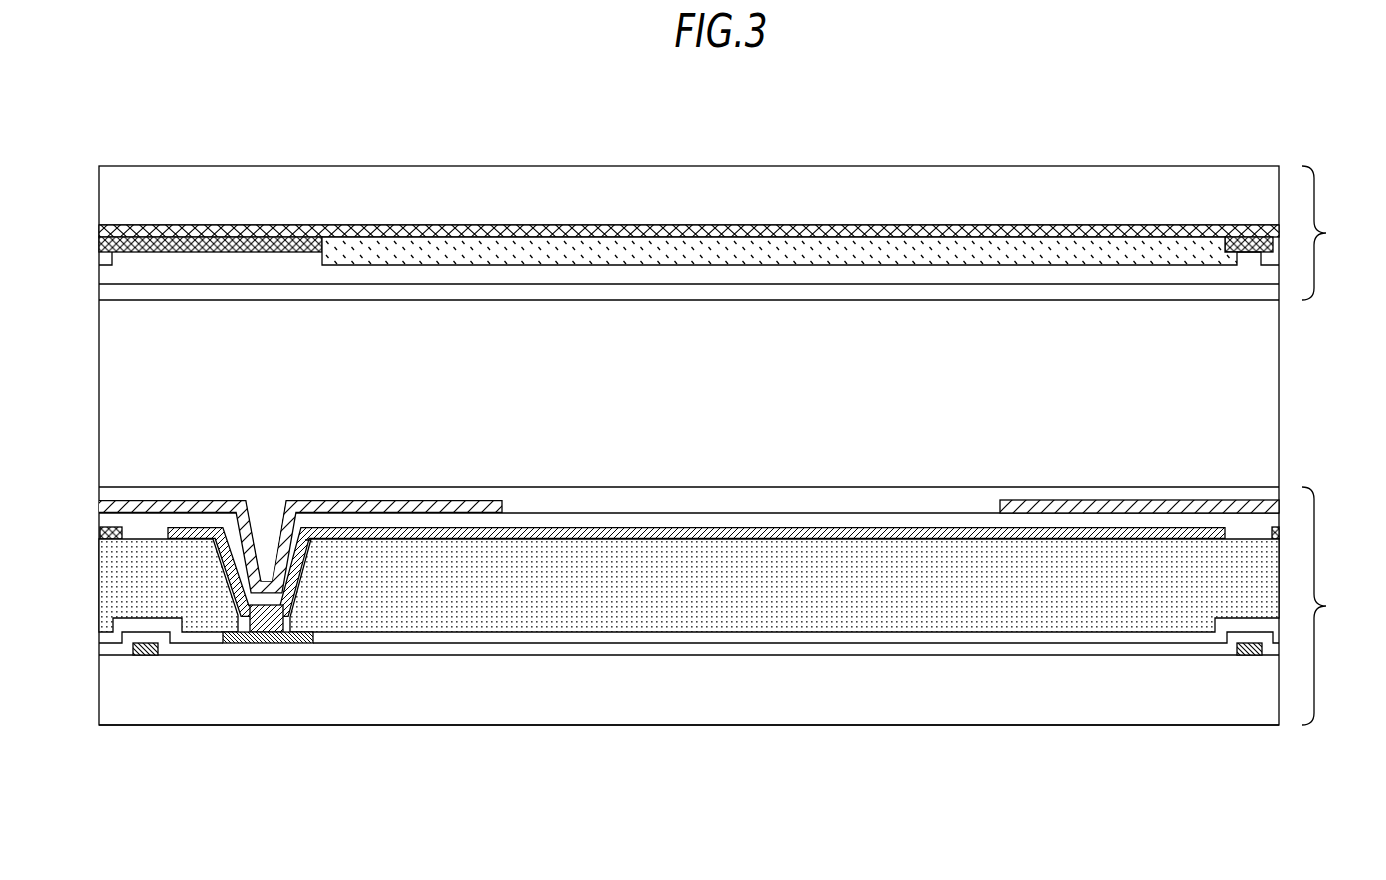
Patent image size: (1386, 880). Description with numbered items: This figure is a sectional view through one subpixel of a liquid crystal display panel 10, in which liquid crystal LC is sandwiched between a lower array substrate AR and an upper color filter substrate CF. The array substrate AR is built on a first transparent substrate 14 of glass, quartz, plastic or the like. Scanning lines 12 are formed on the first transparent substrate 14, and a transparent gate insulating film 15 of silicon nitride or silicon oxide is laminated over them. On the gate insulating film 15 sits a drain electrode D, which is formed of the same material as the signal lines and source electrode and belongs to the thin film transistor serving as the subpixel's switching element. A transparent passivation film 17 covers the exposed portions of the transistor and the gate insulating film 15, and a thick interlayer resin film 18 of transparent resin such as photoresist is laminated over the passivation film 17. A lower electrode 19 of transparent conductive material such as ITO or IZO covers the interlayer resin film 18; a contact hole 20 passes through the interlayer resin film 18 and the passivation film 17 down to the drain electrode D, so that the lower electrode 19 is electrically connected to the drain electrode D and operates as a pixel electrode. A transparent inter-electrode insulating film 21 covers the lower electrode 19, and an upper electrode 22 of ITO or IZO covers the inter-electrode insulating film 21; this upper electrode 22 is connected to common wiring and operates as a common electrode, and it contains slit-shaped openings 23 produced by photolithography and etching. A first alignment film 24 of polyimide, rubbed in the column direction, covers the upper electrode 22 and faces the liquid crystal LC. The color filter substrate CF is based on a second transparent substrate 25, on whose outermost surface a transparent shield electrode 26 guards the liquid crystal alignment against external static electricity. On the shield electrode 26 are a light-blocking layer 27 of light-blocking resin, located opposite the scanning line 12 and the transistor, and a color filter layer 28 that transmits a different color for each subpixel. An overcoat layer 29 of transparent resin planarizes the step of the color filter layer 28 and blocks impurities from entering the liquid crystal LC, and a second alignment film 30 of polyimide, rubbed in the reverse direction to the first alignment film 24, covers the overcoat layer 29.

The liquid crystal display panel 10 is at (1158, 84).
The scanning line 12 is at (145, 655).
The first transparent substrate 14 is at (531, 683).
The gate insulating film 15 is at (470, 650).
The passivation film 17 is at (400, 637).
The interlayer resin film 18 is at (107, 583).
The lower electrode 19 is at (487, 540).
The contact hole 20 is at (268, 598).
The inter-electrode insulating film 21 is at (523, 522).
The upper electrode 22 is at (317, 500).
The slit-shaped opening 23 is at (706, 506).
The first alignment film 24 is at (367, 500).
The second transparent substrate 25 is at (680, 185).
The shield electrode 26 is at (620, 225).
The light-blocking layer 27 is at (148, 248).
The color filter layer 28 is at (567, 248).
The overcoat layer 29 is at (517, 277).
The second alignment film 30 is at (452, 290).
The drain electrode D is at (270, 643).
The liquid crystal LC is at (1122, 371).
The color filter substrate CF is at (1331, 233).
The array substrate AR is at (1333, 606).